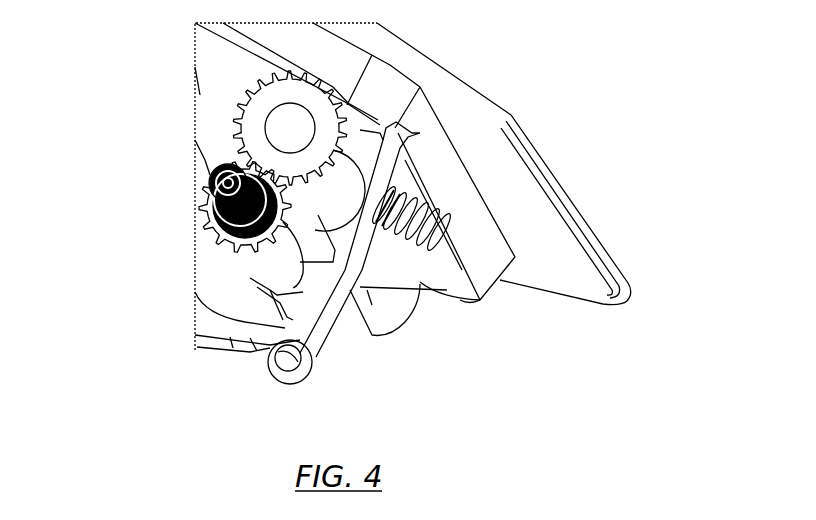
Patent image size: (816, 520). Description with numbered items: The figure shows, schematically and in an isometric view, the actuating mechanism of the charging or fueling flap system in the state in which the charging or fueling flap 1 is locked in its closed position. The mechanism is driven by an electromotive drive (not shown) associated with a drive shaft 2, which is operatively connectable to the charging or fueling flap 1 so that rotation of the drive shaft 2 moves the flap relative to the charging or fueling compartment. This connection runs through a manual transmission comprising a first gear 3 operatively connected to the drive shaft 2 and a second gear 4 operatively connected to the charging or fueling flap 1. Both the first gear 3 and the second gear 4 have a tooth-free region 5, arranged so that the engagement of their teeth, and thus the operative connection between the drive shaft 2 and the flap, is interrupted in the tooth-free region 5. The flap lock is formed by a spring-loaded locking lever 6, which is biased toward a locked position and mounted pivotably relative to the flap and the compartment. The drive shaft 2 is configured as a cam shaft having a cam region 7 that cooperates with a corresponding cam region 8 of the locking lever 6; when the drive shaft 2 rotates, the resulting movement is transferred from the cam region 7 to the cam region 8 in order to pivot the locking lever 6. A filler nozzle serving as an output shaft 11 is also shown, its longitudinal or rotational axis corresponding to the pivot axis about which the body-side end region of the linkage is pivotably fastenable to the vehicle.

The charging or fueling flap 1 is at (530, 205).
The drive shaft 2 is at (270, 260).
The first gear 3 is at (232, 231).
The second gear 4 is at (266, 94).
The tooth-free region 5 is at (214, 170).
The locking lever 6 is at (382, 172).
The cam region of the drive shaft 7 is at (297, 290).
The cam region of the locking lever 8 is at (315, 273).
The output shaft 11 is at (286, 131).